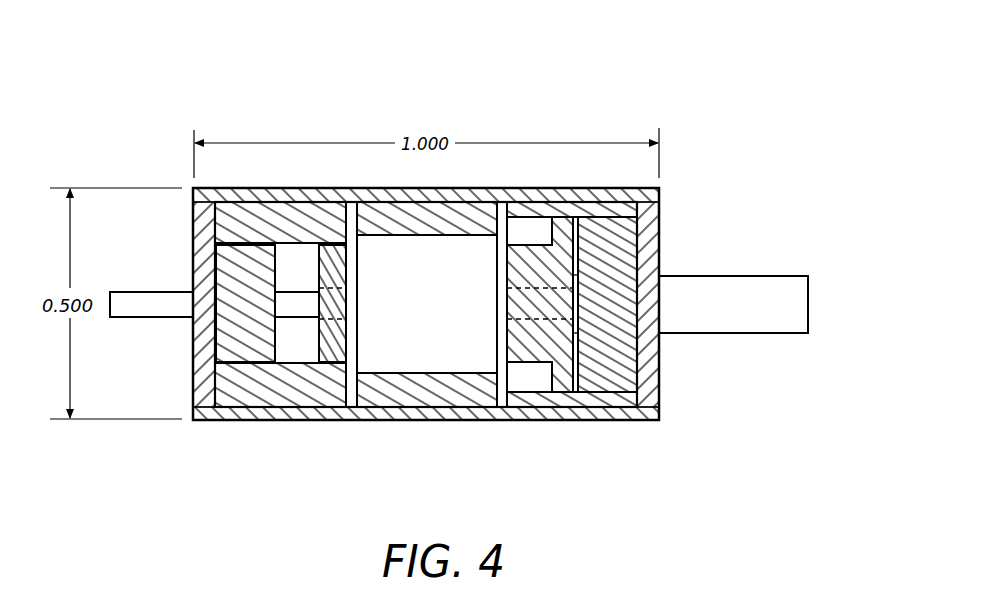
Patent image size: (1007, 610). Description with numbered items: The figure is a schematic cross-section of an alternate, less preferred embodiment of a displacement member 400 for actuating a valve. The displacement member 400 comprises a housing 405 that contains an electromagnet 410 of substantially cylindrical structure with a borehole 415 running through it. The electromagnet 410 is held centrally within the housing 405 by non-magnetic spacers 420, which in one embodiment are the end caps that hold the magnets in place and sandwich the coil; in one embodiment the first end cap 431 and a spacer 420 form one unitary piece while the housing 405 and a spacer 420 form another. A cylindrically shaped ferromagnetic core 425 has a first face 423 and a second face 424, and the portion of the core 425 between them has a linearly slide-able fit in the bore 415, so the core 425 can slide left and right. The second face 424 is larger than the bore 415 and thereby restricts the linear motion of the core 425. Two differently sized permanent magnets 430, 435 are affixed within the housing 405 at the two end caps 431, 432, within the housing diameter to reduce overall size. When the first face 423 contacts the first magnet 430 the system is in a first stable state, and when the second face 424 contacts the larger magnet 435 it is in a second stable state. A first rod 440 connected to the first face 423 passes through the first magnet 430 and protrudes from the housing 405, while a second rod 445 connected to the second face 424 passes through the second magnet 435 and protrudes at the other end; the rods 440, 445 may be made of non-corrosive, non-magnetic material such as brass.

The displacement member 400 is at (156, 85).
The housing 405 is at (655, 398).
The electromagnet 410 is at (390, 408).
The borehole 415 is at (422, 350).
The non-magnetic spacers 420 is at (257, 205).
The first face 423 is at (318, 350).
The second face 424 is at (598, 217).
The ferromagnetic core 425 is at (528, 358).
The first magnet 430 is at (215, 280).
The first end cap 431 is at (197, 410).
The second end cap 432 is at (655, 263).
The second magnet 435 is at (620, 333).
The first rod 440 is at (182, 308).
The second rod 445 is at (802, 320).